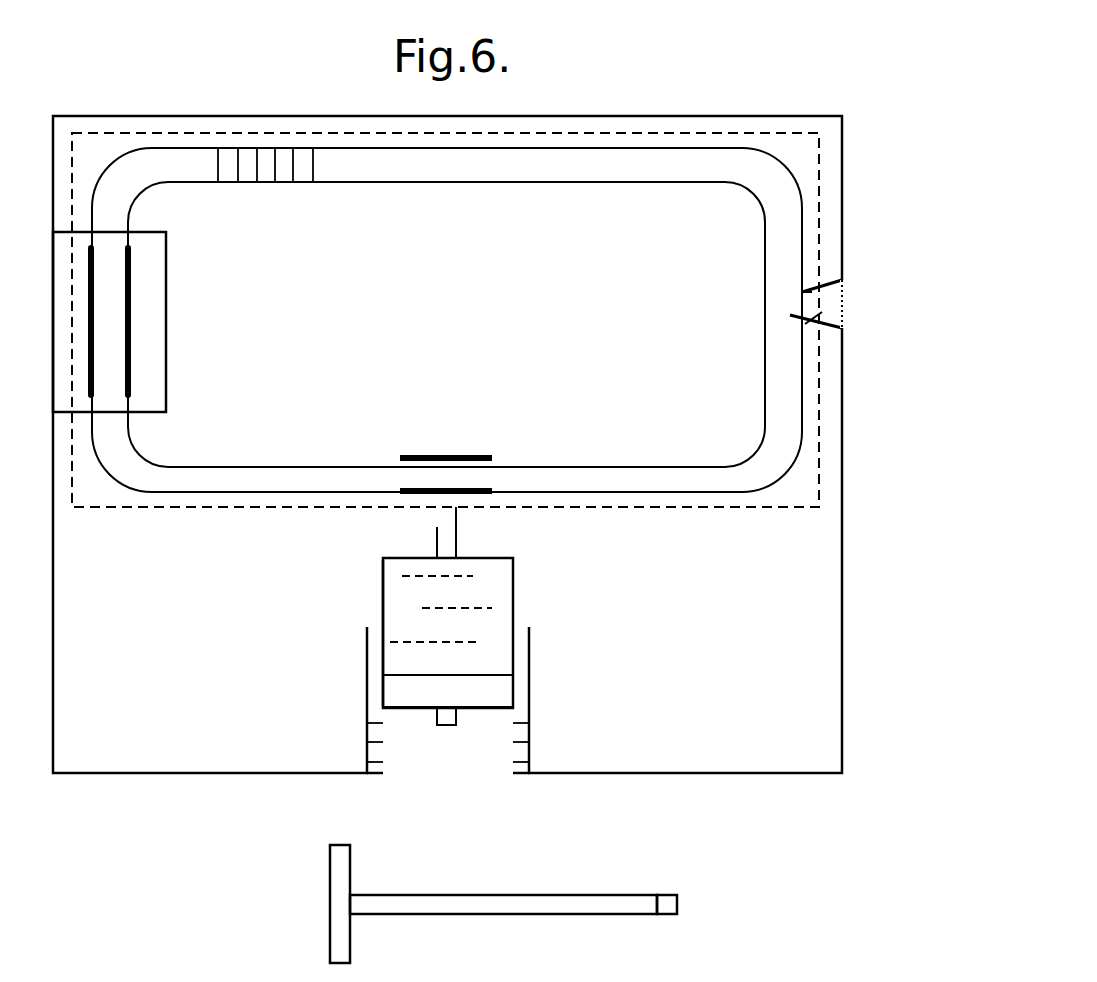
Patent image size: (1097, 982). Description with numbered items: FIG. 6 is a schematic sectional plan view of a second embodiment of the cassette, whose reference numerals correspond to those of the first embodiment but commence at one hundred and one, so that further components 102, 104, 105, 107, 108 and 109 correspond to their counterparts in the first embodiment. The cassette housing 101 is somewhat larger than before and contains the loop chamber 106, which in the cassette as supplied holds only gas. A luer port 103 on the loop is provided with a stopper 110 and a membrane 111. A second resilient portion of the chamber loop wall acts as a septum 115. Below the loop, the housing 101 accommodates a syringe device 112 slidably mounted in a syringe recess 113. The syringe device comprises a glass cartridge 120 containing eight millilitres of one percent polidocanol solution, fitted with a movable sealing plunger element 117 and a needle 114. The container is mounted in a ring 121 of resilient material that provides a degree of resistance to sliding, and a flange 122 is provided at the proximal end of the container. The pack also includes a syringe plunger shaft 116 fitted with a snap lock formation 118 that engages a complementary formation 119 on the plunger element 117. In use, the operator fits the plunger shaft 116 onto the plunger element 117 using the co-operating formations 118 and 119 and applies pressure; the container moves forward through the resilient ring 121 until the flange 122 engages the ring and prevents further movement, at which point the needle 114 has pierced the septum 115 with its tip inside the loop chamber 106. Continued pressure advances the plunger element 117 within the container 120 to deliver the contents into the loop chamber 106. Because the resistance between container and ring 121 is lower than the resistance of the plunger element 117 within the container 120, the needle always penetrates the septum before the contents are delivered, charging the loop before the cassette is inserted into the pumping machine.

The cassette housing 101 is at (56, 128).
The drive unit 102 is at (168, 312).
The luer port 103 is at (793, 291).
The dashed enclosure boundary 104 is at (798, 150).
The inner track rail 105 is at (543, 183).
The loop chamber 106 is at (420, 170).
The drive element 107 is at (130, 367).
The track segment 108 is at (277, 182).
The track segment 109 is at (242, 173).
The stopper 110 is at (800, 318).
The membrane 111 is at (845, 318).
The syringe device 112 is at (513, 590).
The syringe recess 113 is at (530, 655).
The needle 114 is at (458, 532).
The septum 115 is at (445, 455).
The syringe plunger shaft 116 is at (545, 895).
The plunger element 117 is at (405, 693).
The snap lock formation 118 is at (680, 903).
The complementary formation 119 is at (450, 727).
The cartridge 120 is at (383, 593).
The ring 121 is at (530, 730).
The flange 122 is at (512, 770).